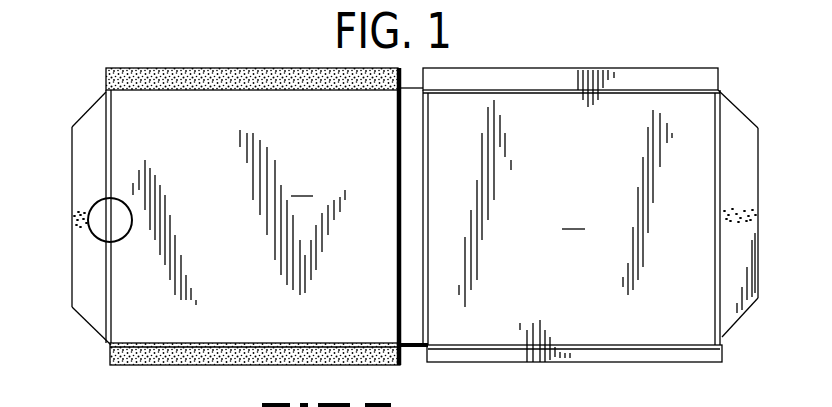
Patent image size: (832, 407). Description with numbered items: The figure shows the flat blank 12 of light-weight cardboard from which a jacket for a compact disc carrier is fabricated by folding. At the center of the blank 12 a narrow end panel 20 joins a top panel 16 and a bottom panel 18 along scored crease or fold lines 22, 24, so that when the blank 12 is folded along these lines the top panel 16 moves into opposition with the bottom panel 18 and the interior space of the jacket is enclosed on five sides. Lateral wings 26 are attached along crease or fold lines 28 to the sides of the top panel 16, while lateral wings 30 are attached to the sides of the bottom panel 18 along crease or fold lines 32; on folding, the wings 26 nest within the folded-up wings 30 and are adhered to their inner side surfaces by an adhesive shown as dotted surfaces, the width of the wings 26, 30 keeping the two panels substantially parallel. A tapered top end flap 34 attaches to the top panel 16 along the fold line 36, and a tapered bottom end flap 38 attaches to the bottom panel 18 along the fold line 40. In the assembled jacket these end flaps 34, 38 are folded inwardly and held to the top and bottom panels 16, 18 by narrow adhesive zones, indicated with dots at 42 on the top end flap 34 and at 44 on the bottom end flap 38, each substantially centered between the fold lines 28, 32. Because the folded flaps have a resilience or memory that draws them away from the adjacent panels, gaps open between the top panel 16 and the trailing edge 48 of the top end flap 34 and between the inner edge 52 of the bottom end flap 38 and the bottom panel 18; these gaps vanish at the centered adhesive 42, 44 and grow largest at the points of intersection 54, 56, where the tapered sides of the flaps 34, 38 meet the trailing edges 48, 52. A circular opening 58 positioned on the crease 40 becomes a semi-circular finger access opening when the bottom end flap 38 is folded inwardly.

The blank 12 is at (702, 61).
The top panel 16 is at (565, 203).
The bottom panel 18 is at (239, 217).
The end panel 20 is at (410, 143).
The fold line 22 is at (430, 193).
The fold line 24 is at (398, 165).
The lateral wings 26 is at (505, 75).
The fold lines 28 is at (635, 88).
The lateral wings 30 is at (235, 68).
The fold lines 32 is at (315, 91).
The top end flap 34 is at (747, 167).
The fold line 36 is at (720, 168).
The bottom end flap 38 is at (83, 278).
The fold line 40 is at (112, 118).
The adhesive 42 is at (760, 213).
The adhesive 44 is at (72, 221).
The trailing edge 48 is at (762, 255).
The inner edge 52 is at (72, 170).
The points of intersection 54 is at (758, 128).
The points of intersection 56 is at (70, 127).
The circular opening 58 is at (125, 219).